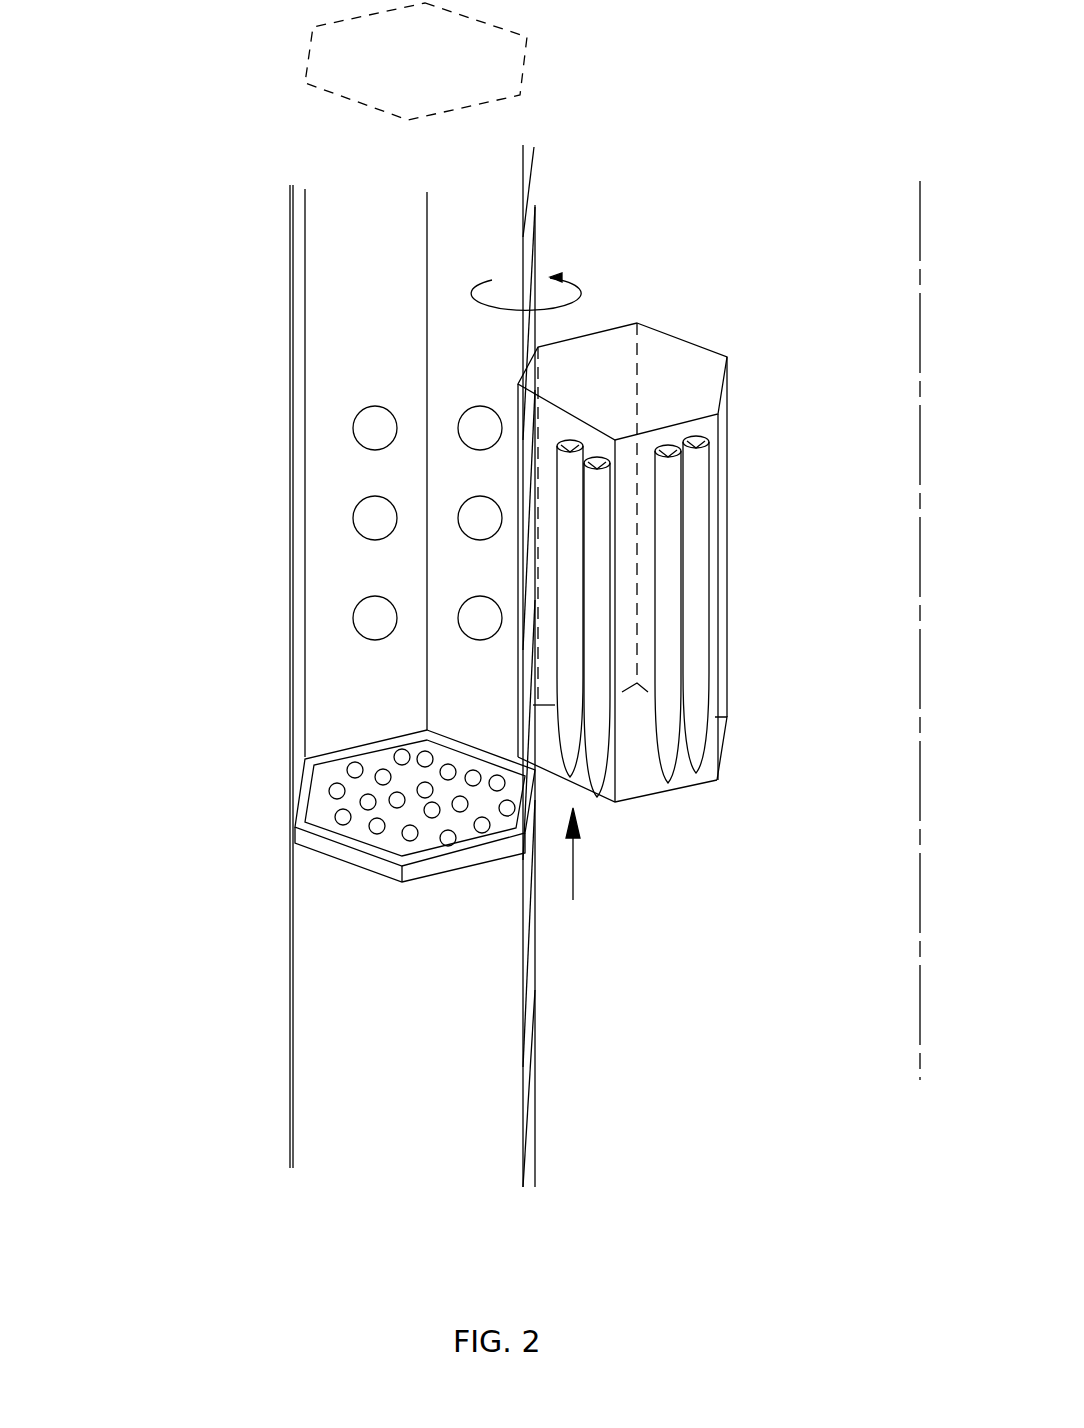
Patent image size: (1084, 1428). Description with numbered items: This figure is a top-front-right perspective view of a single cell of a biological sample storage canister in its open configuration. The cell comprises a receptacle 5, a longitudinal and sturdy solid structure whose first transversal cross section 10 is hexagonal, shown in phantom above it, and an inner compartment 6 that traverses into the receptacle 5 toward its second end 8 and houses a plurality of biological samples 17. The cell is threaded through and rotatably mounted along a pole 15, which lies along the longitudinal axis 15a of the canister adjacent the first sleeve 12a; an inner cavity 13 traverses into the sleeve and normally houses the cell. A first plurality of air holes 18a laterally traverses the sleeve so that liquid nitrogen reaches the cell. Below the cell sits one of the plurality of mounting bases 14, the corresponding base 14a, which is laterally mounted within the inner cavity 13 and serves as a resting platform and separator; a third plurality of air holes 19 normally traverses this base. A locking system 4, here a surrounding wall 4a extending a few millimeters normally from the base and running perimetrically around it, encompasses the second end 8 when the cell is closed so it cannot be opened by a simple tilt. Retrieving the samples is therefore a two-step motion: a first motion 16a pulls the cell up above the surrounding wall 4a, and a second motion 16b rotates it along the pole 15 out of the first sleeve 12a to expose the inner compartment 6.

The first transversal cross section 10 is at (530, 36).
The first sleeve 12a is at (292, 318).
The inner cavity 13 is at (364, 222).
The first plurality of air holes 18a is at (386, 418).
The pole 15 is at (527, 1067).
The longitudinal axis 15a is at (920, 945).
The second motion 16b is at (580, 283).
The first motion 16a is at (573, 900).
The inner compartment 6 is at (664, 356).
The receptacle 5 is at (727, 573).
The second end 8 is at (738, 733).
The plurality of biological samples 17 is at (597, 773).
The plurality of mounting bases 14 is at (305, 759).
The corresponding base 14a is at (323, 795).
The third plurality of air holes 19 is at (356, 763).
The locking system 4 is at (369, 903).
The surrounding wall 4a is at (337, 850).